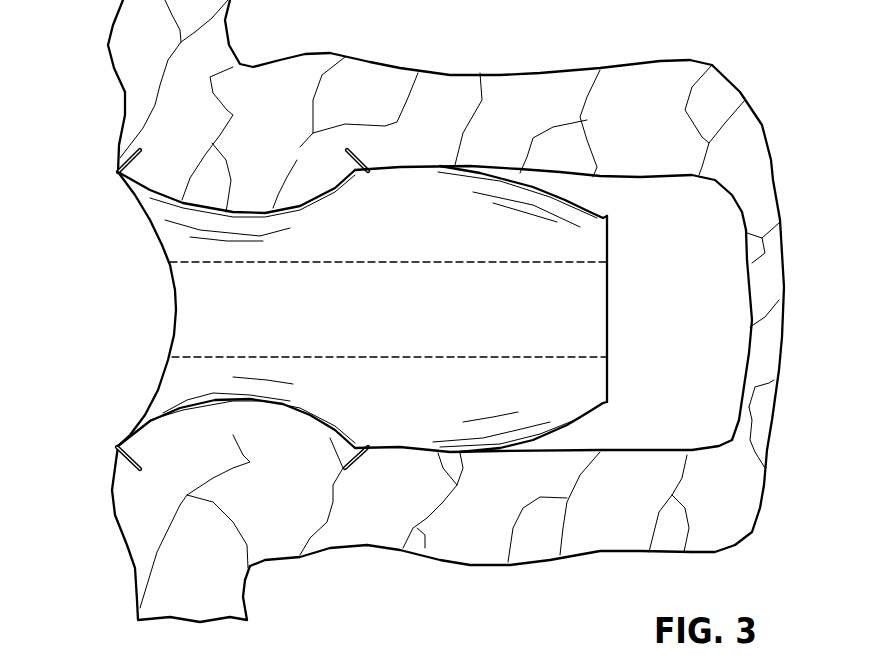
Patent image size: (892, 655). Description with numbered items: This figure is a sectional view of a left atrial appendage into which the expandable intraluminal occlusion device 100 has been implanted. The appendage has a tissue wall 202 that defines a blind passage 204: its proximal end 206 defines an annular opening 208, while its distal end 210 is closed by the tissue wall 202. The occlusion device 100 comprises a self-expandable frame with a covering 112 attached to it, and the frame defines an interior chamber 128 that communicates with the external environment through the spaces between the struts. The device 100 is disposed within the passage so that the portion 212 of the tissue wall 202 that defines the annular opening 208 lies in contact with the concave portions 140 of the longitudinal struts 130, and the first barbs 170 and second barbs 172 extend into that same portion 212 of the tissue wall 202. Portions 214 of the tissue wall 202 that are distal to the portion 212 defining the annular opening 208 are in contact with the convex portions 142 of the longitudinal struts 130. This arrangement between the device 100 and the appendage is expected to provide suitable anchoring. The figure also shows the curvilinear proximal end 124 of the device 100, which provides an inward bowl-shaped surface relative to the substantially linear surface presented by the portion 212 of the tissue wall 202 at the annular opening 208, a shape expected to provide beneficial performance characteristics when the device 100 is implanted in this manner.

The intraluminal occlusion device 100 is at (550, 127).
The covering 112 is at (371, 313).
The proximal end 124 is at (126, 309).
The interior chamber 128 is at (649, 309).
The longitudinal struts 130 is at (554, 309).
The concave portions 140 is at (252, 295).
The convex portions 142 is at (517, 177).
The first barbs 170 is at (96, 308).
The second barbs 172 is at (359, 275).
The tissue wall 202 is at (765, 340).
The blind passage 204 is at (597, 341).
The proximal end 206 is at (174, 242).
The annular opening 208 is at (177, 386).
The distal end 210 is at (784, 345).
The portion of the tissue wall 212 is at (208, 311).
The portions of the tissue wall 214 is at (446, 305).